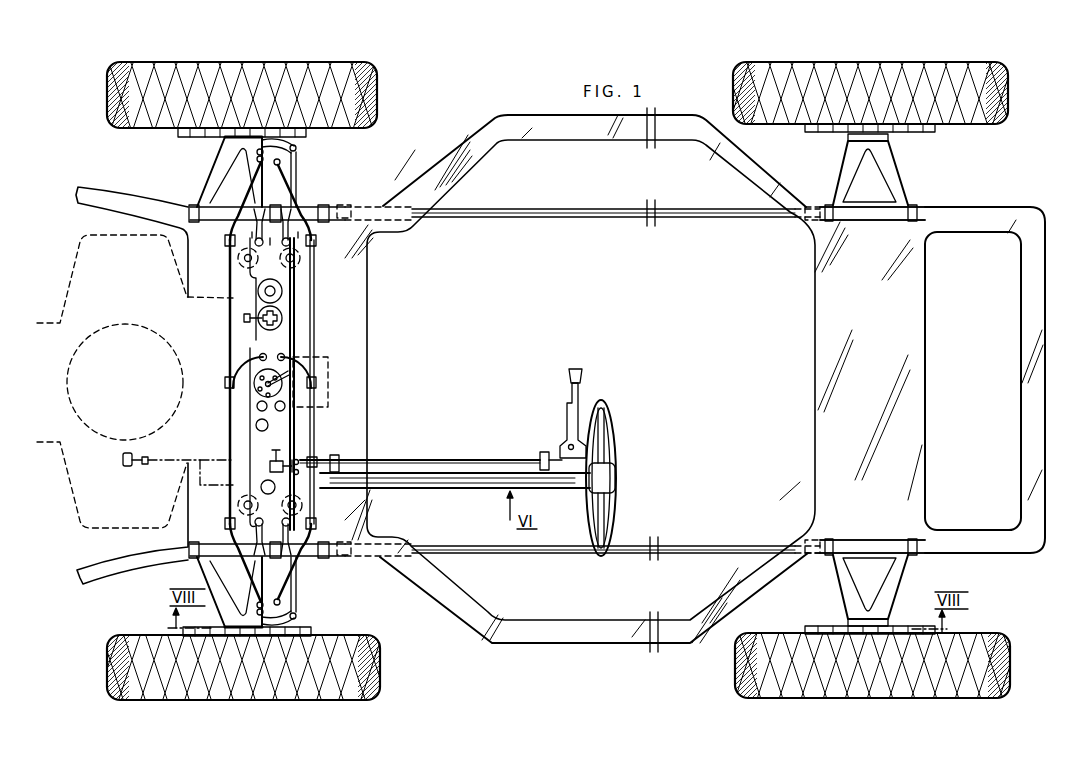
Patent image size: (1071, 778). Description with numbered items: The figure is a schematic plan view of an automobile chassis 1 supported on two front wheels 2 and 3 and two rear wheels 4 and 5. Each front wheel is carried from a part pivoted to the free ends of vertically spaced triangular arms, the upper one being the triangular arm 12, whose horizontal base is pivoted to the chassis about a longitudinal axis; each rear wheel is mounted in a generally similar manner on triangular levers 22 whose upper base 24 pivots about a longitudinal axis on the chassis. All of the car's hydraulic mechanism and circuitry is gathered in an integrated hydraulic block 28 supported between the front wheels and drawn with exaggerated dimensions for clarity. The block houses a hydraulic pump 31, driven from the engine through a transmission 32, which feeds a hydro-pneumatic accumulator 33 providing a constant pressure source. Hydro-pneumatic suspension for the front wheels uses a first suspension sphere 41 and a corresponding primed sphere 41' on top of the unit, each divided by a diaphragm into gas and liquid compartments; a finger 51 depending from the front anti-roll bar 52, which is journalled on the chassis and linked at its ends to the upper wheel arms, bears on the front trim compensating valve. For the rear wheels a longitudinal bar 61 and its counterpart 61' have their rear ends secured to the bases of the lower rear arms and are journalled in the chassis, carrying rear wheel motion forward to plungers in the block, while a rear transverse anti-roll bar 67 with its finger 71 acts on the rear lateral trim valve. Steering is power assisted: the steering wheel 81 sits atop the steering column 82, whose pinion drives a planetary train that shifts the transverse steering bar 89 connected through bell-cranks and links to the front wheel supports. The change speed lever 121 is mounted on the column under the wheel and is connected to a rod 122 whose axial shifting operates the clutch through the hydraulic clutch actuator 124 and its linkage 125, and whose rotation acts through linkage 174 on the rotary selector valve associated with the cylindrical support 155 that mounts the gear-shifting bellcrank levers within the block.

The automobile chassis 1 is at (386, 205).
The front wheel 2 is at (377, 97).
The front wheel 3 is at (347, 637).
The rear wheel 4 is at (975, 120).
The rear wheel 5 is at (1010, 655).
The triangular arm 12 is at (217, 177).
The triangular lever 22 is at (842, 168).
The upper base 24 is at (860, 214).
The hydraulic block 28 is at (287, 305).
The hydraulic pump 31 is at (273, 321).
The transmission 32 is at (244, 318).
The hydro-pneumatic accumulator 33 is at (282, 291).
The first suspension sphere 41 is at (251, 504).
The suspension sphere 41' is at (247, 258).
The finger 51 is at (236, 360).
The front anti-roll bar 52 is at (232, 404).
The longitudinal bar 61 is at (578, 559).
The longitudinal bar 61' is at (578, 201).
The rear transverse anti-roll bar 67 is at (314, 425).
The finger 71 is at (313, 366).
The steering wheel 81 is at (614, 428).
The steering column 82 is at (497, 478).
The steering bar 89 is at (294, 294).
The change speed lever 121 is at (573, 392).
The rod 122 is at (478, 455).
The hydraulic clutch actuator 124 is at (265, 482).
The linkage 125 is at (161, 471).
The cylindrical support 155 is at (283, 355).
The linkage 174 is at (287, 430).